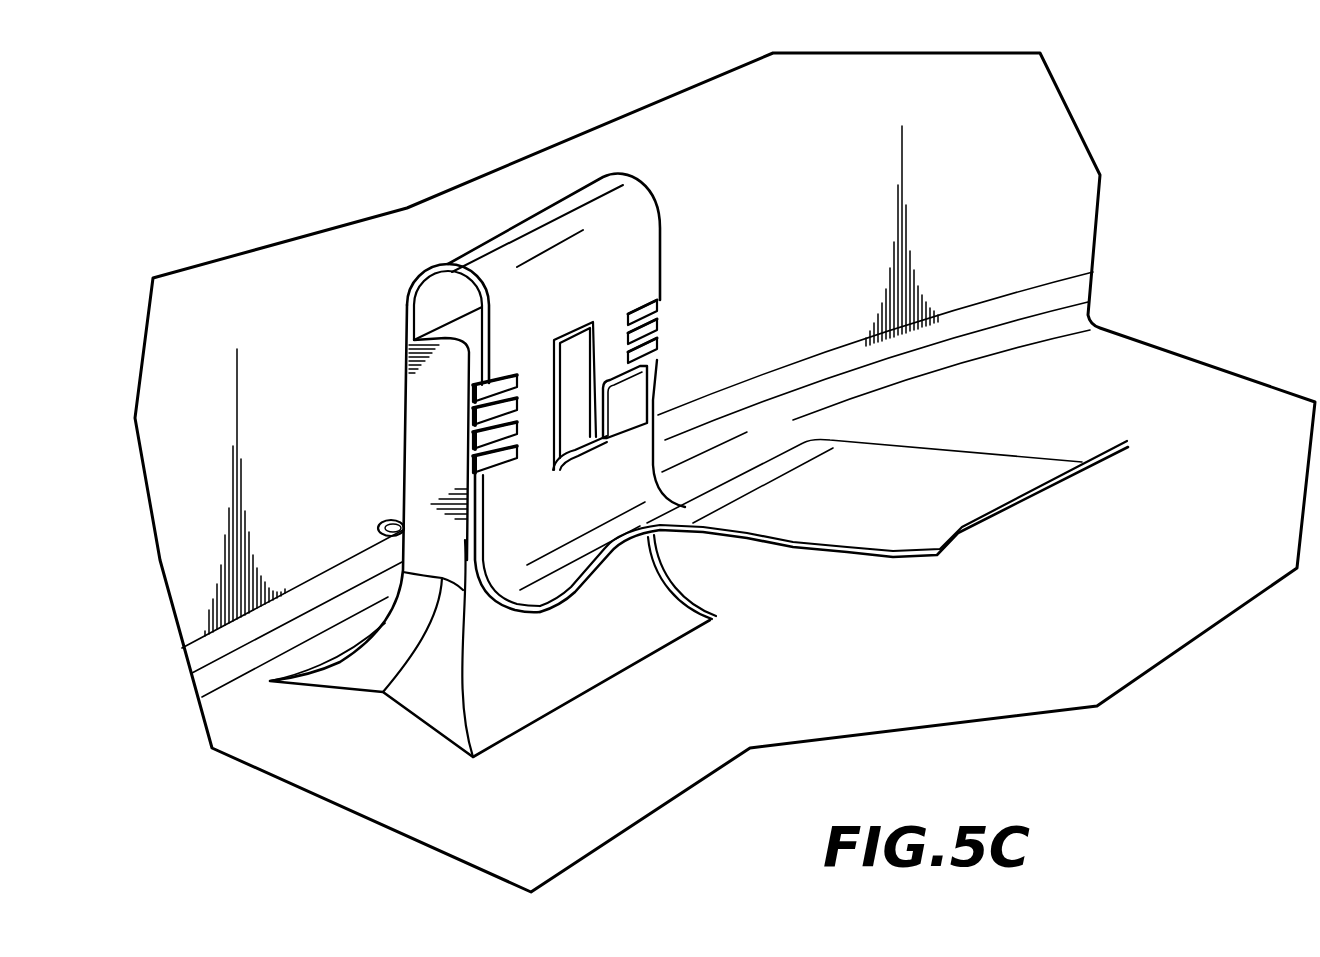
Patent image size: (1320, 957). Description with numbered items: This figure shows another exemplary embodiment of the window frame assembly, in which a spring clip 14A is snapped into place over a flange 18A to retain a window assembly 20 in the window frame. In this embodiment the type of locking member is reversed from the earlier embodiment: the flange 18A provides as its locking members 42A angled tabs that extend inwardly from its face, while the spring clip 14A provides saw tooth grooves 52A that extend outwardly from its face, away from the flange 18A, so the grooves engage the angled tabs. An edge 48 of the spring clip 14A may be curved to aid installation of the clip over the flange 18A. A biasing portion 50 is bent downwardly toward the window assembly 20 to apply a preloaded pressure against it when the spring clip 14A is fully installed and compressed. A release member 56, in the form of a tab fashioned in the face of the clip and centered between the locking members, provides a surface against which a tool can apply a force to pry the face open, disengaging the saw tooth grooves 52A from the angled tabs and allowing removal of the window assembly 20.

The spring clip 14A is at (673, 170).
The flange 18A is at (377, 434).
The window assembly 20 is at (812, 637).
The locking members 42A is at (456, 430).
The edge 48 is at (384, 523).
The biasing portion 50 is at (735, 467).
The saw tooth grooves 52A is at (507, 473).
The release member 56 is at (630, 394).